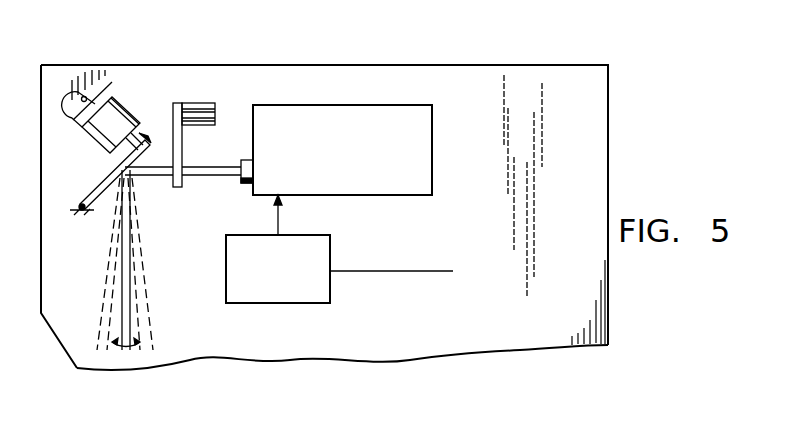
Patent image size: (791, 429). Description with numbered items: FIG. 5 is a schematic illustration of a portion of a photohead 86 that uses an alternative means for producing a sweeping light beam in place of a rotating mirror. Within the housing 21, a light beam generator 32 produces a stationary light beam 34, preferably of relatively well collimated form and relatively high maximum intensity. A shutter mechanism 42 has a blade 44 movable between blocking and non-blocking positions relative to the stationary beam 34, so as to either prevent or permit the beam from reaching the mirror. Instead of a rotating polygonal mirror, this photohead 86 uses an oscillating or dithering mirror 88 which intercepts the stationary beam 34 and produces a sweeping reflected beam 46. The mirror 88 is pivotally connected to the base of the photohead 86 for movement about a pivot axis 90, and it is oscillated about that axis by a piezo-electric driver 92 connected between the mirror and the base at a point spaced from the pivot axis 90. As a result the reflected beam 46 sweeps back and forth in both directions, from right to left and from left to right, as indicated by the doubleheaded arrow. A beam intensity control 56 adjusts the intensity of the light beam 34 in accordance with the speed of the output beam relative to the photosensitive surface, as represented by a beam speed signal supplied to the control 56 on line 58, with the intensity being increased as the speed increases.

The photohead 86 is at (442, 65).
The housing 21 is at (510, 65).
The light beam generator 32 is at (432, 173).
The stationary light beam 34 is at (234, 176).
The blade 44 is at (173, 145).
The shutter mechanism 42 is at (213, 103).
The piezo-electric driver 92 is at (122, 116).
The oscillating mirror 88 is at (107, 181).
The pivot axis 90 is at (88, 213).
The sweeping reflected beam 46 is at (130, 228).
The beam intensity control 56 is at (316, 235).
The line 58 is at (410, 272).